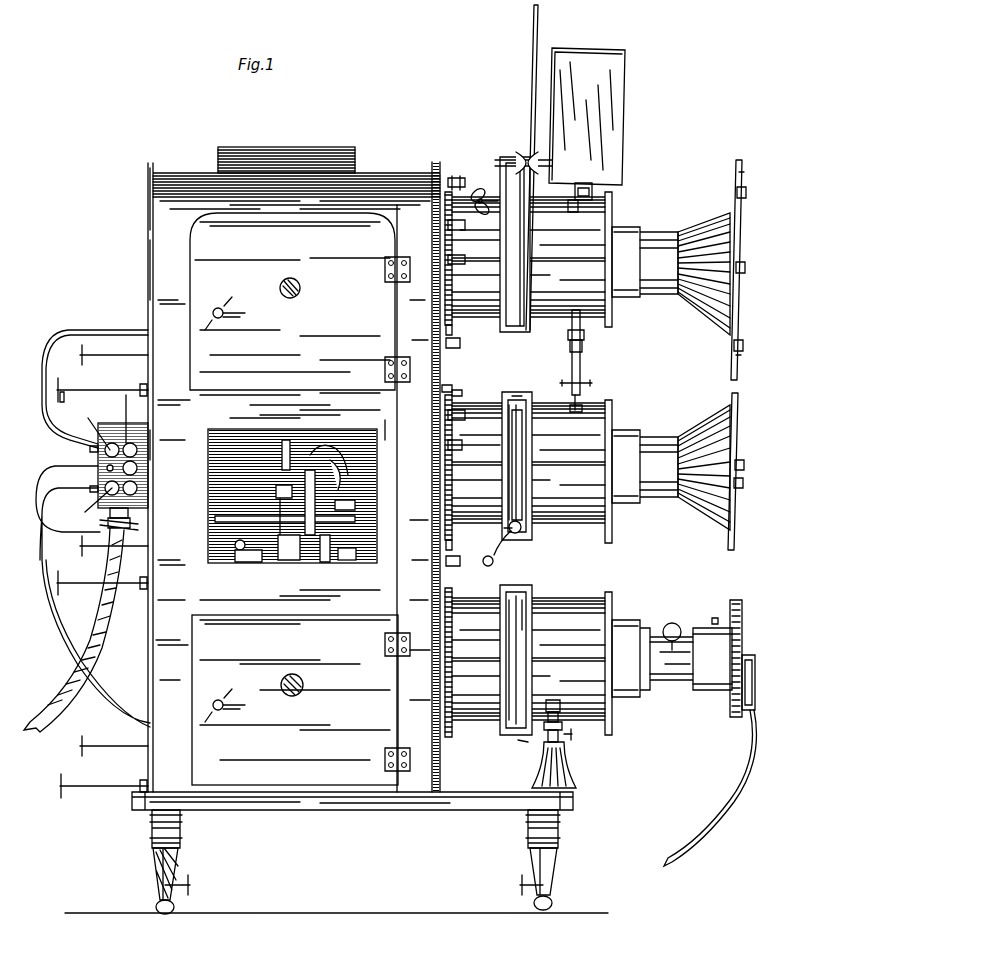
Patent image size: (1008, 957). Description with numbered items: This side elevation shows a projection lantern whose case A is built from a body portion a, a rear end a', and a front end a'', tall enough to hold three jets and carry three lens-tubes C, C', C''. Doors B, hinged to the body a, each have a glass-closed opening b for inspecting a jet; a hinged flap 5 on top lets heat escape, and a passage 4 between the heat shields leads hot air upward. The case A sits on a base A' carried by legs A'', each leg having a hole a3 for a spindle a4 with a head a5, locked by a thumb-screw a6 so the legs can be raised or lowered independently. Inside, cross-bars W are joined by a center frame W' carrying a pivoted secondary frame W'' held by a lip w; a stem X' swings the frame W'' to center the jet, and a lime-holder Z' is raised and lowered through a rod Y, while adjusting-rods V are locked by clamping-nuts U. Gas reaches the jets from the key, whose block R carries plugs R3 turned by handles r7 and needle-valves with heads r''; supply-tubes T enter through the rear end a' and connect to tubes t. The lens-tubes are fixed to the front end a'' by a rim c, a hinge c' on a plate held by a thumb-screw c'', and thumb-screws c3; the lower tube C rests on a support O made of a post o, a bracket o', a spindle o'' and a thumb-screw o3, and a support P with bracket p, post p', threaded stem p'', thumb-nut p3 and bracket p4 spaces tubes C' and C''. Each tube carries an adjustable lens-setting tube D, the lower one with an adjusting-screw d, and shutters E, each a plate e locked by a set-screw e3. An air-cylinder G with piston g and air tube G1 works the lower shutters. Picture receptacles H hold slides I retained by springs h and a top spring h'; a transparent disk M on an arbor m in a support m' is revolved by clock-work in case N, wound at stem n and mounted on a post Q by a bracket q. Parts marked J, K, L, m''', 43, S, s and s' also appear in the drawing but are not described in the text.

The case A is at (280, 477).
The rear end a' is at (137, 234).
The hinged door or flap 5 is at (286, 149).
The doors B is at (300, 499).
The opening b is at (260, 500).
The passage 4 is at (215, 518).
The base or center frame W' is at (298, 520).
The secondary frame W'' is at (295, 534).
The cross-bars W is at (345, 528).
The lip w is at (350, 562).
The tube t is at (327, 565).
The rod or stem X' is at (235, 567).
The lime-holder Z' is at (329, 438).
The bracket 43 is at (375, 420).
The base A' is at (352, 816).
The legs A'' is at (355, 836).
The hole a3 is at (156, 860).
The spindle a4 is at (160, 878).
The head a5 is at (176, 908).
The thumb-screw a6 is at (192, 884).
The tubes T is at (84, 528).
The rod Y is at (114, 545).
The adjusting-rod V is at (102, 582).
The clamping-nut U is at (142, 384).
The head or block R is at (95, 466).
The head r'' is at (145, 445).
The handle r7 is at (95, 466).
The plugs R3 is at (115, 446).
The body portion a is at (167, 437).
The hose S is at (74, 630).
The hose coupling s is at (138, 528).
The coupling s' is at (151, 508).
The lens-tube C'' is at (528, 259).
The lens-tube C' is at (528, 469).
The lens-tube C is at (528, 662).
The receptacles H is at (513, 446).
The slide I is at (506, 455).
The slide bar J is at (517, 465).
The crank K is at (520, 534).
The link L is at (510, 528).
The top spring h' is at (532, 384).
The springs h is at (541, 673).
The circular transparent disk M is at (527, 92).
The case N is at (576, 134).
The arbor m is at (507, 148).
The support m' is at (515, 150).
The fan m''' is at (498, 201).
The bracket q is at (563, 218).
The post Q is at (594, 190).
The disk or rim c is at (456, 169).
The thumb-screw c3 is at (466, 302).
The hinge c' is at (455, 434).
The thumb-screw c'' is at (463, 455).
The front end a'' is at (452, 381).
The post o is at (497, 578).
The adjustable support P is at (582, 364).
The bracket p is at (564, 330).
The post p' is at (561, 345).
The screw-threaded stem p'' is at (592, 374).
The thumb-nut p3 is at (592, 386).
The bracket p4 is at (582, 398).
The adjustable tubes D is at (672, 451).
The shutters E is at (715, 355).
The set-screw e3 is at (735, 194).
The plate e is at (735, 260).
The piston g is at (728, 690).
The air-cylinder G is at (740, 706).
The tube G1 is at (730, 796).
The adjusting-screw d is at (672, 625).
The stem n is at (709, 623).
The adjustable support O is at (558, 744).
The bracket o' is at (544, 743).
The spindle o'' is at (568, 729).
The thumb-screw o3 is at (571, 732).